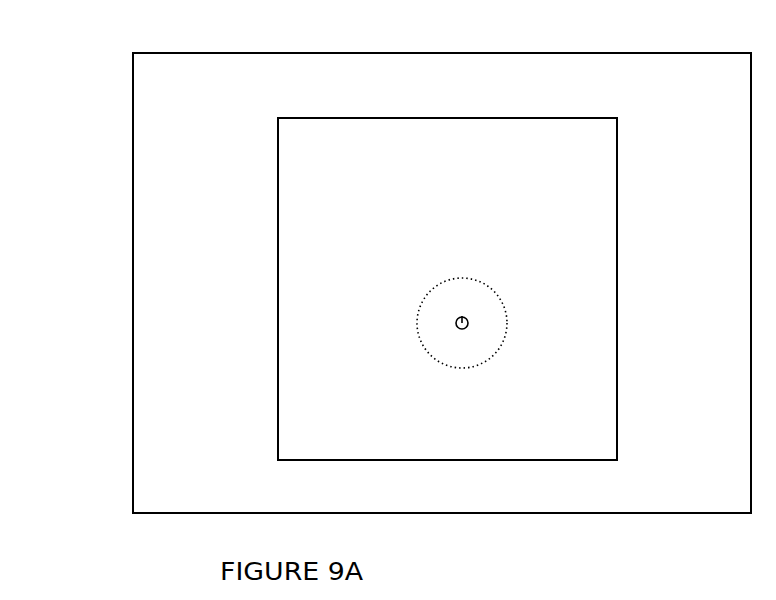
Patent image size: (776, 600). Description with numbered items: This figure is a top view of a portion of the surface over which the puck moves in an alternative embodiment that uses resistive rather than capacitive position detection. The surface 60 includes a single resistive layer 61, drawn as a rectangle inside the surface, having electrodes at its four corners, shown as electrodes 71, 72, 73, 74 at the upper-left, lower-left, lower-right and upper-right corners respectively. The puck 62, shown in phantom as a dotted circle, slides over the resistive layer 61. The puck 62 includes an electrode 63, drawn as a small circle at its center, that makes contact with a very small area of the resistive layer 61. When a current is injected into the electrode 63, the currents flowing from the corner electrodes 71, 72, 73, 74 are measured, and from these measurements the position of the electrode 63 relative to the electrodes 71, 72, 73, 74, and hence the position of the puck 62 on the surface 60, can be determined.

The surface 60 is at (511, 504).
The resistive layer 61 is at (610, 217).
The puck 62 is at (434, 348).
The electrode 63 is at (465, 312).
The electrode 71 is at (278, 118).
The electrode 72 is at (278, 460).
The electrode 73 is at (617, 460).
The electrode 74 is at (617, 118).